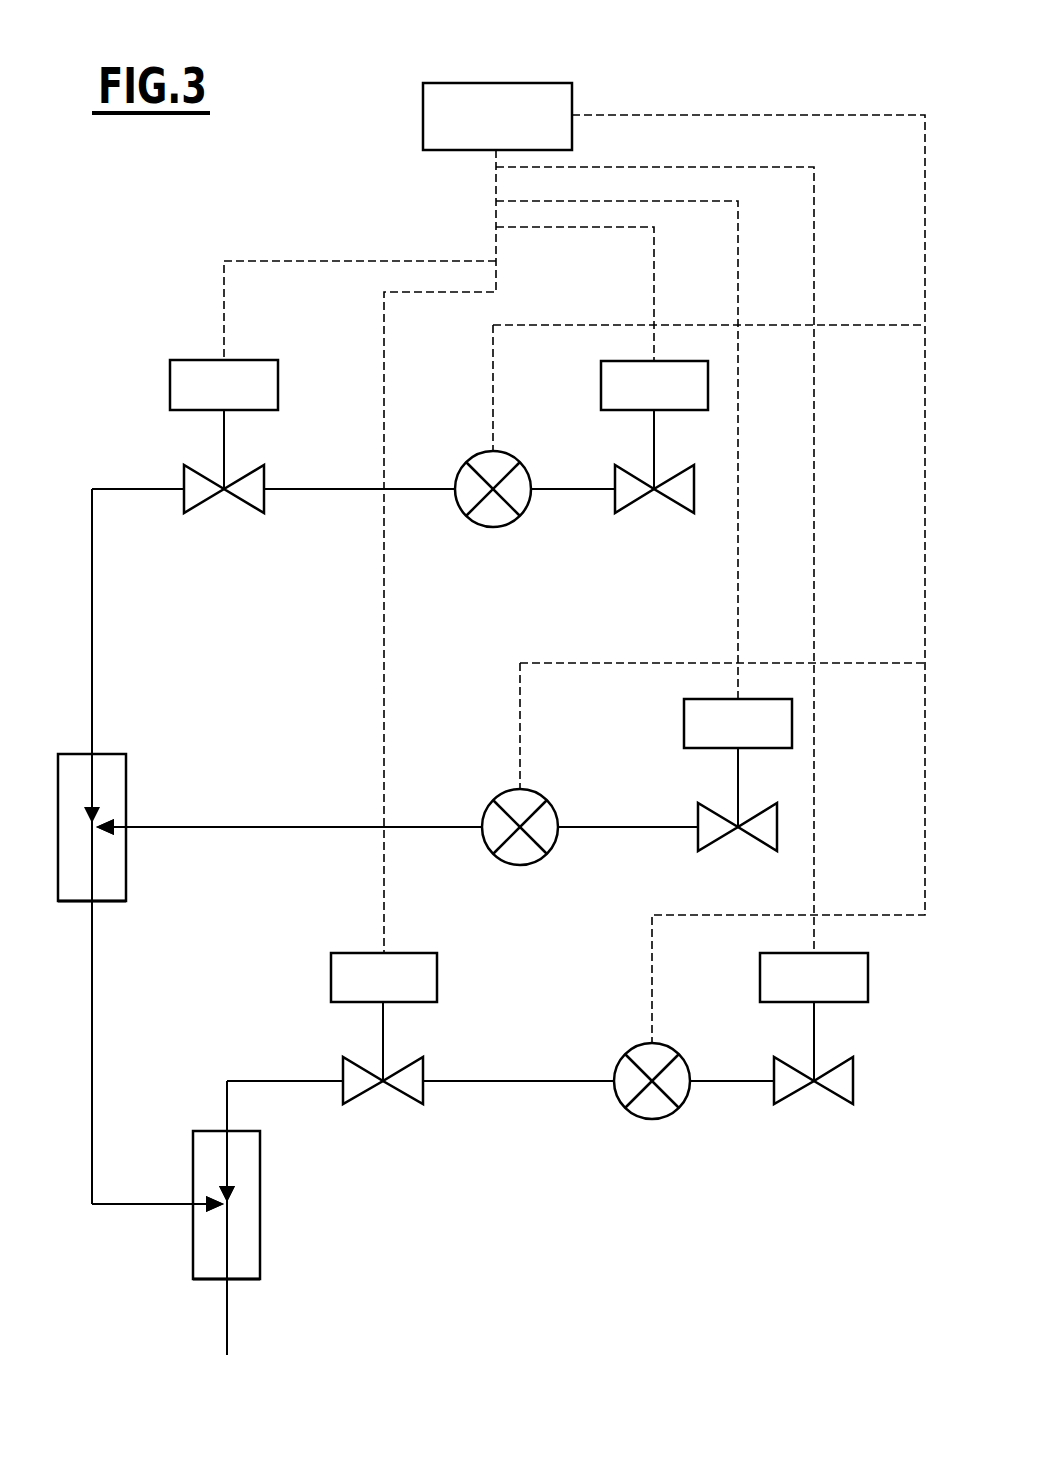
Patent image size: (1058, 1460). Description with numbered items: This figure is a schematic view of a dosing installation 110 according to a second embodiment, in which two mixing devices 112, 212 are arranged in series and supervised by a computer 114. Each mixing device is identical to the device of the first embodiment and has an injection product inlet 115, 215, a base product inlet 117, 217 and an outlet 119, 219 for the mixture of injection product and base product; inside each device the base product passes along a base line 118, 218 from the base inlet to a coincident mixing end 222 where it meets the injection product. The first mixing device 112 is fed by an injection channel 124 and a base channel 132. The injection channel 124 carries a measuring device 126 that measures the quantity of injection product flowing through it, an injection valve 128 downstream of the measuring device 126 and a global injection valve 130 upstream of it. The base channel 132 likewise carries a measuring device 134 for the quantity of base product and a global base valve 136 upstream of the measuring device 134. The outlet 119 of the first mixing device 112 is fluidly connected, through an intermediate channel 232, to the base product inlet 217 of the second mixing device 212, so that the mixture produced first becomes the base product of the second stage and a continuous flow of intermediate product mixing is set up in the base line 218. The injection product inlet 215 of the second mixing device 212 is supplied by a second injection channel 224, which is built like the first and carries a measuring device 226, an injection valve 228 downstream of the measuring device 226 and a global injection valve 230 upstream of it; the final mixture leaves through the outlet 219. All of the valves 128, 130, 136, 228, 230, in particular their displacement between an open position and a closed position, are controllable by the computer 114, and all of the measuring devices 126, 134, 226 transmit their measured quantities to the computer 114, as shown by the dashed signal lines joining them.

The dosing installation 110 is at (803, 1261).
The first mixing device 112 is at (113, 919).
The computer 114 is at (512, 71).
The injection product inlet 115 is at (90, 752).
The base product inlet 117 is at (128, 825).
The first chamber inlet arrow 118 is at (118, 832).
The outlet 119 is at (88, 903).
The injection channel 124 is at (107, 471).
The measuring device 126 is at (493, 527).
The injection valve 128 is at (242, 503).
The global injection valve 130 is at (670, 503).
The base channel 132 is at (286, 852).
The measuring device 134 is at (520, 866).
The global base valve 136 is at (752, 840).
The second mixing device 212 is at (246, 1298).
The injection product inlet 215 is at (222, 1130).
The base product inlet 217 is at (200, 1202).
The base line 218 is at (196, 1208).
The outlet 219 is at (222, 1280).
The second chamber top inlet 222 is at (230, 1204).
The second injection channel 224 is at (516, 1106).
The measuring device 226 is at (652, 1120).
The injection valve 228 is at (400, 1095).
The global injection valve 230 is at (830, 1097).
The intermediate channel 232 is at (92, 1033).